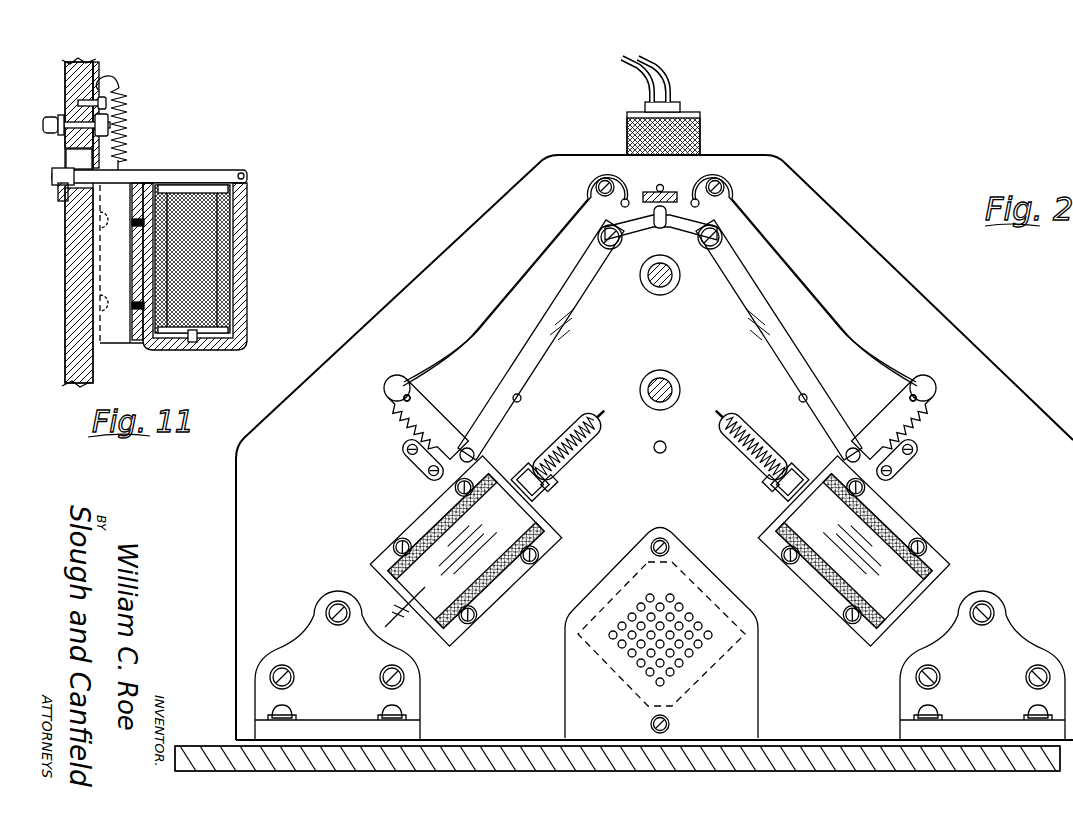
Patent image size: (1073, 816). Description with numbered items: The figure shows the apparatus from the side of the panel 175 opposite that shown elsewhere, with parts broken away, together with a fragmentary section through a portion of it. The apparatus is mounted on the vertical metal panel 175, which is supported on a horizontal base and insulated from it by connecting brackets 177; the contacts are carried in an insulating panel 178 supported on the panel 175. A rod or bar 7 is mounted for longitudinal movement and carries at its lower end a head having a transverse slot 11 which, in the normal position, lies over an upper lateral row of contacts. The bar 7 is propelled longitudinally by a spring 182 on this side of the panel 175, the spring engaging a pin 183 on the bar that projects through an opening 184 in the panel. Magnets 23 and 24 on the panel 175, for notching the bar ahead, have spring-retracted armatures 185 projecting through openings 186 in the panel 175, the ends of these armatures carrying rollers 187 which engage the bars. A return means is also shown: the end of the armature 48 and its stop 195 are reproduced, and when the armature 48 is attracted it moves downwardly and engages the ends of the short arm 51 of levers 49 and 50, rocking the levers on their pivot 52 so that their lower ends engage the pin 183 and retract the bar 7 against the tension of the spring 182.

In FIG. 11, the rod or bar 7 is at (62, 195).
In FIG. 2, the slot 11 is at (400, 607).
In FIG. 11, the magnet 23 is at (232, 272).
In FIG. 2, the magnet 23 is at (432, 532).
In FIG. 2, the magnet 24 is at (886, 525).
In FIG. 2, the armature 48 is at (670, 192).
In FIG. 2, the lever 49 is at (728, 279).
In FIG. 2, the lever 50 is at (594, 279).
In FIG. 2, the short arm 51 is at (660, 228).
In FIG. 2, the pivot 52 is at (604, 230).
In FIG. 2, the panel 175 is at (967, 338).
In FIG. 2, the connecting bracket 177 is at (1013, 628).
In FIG. 2, the insulating panel 178 is at (758, 668).
In FIG. 2, the spring 182 is at (518, 281).
In FIG. 2, the pin 183 is at (412, 392).
In FIG. 2, the opening 184 is at (430, 403).
In FIG. 11, the armature 185 is at (188, 170).
In FIG. 2, the armature 185 is at (545, 470).
In FIG. 11, the opening 186 is at (70, 156).
In FIG. 2, the opening 186 is at (553, 488).
In FIG. 11, the roller 187 is at (58, 181).
In FIG. 2, the stop 195 is at (659, 185).